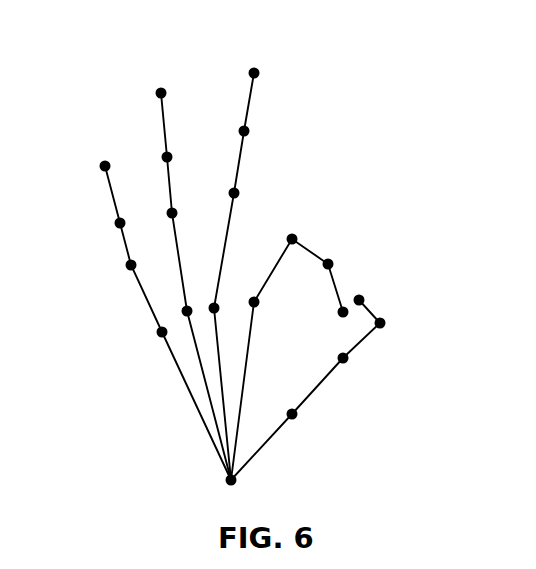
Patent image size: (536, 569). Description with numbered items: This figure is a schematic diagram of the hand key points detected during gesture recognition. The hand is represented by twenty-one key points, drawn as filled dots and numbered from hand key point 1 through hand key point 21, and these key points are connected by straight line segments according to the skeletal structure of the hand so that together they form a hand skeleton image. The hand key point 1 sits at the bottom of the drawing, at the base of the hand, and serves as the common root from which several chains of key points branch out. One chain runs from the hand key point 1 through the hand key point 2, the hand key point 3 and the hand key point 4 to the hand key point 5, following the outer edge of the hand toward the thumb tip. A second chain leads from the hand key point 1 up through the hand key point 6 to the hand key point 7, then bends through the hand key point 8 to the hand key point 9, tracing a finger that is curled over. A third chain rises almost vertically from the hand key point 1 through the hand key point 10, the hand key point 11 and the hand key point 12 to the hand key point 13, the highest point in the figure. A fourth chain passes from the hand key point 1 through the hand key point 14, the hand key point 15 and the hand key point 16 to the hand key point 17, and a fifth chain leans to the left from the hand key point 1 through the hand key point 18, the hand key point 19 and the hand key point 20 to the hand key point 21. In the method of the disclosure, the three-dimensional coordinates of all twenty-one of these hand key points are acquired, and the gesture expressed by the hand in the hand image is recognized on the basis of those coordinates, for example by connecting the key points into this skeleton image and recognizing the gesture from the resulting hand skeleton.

The hand key point 1 is at (228, 490).
The hand key point 2 is at (299, 426).
The hand key point 3 is at (346, 366).
The hand key point 4 is at (389, 325).
The hand key point 5 is at (363, 294).
The hand key point 6 is at (261, 308).
The hand key point 7 is at (297, 229).
The hand key point 8 is at (334, 257).
The hand key point 9 is at (337, 322).
The hand key point 10 is at (225, 309).
The hand key point 11 is at (245, 199).
The hand key point 12 is at (254, 133).
The hand key point 13 is at (266, 75).
The hand key point 14 is at (194, 304).
The hand key point 15 is at (184, 210).
The hand key point 16 is at (178, 155).
The hand key point 17 is at (172, 93).
The hand key point 18 is at (155, 342).
The hand key point 19 is at (123, 275).
The hand key point 20 is at (111, 228).
The hand key point 21 is at (96, 170).